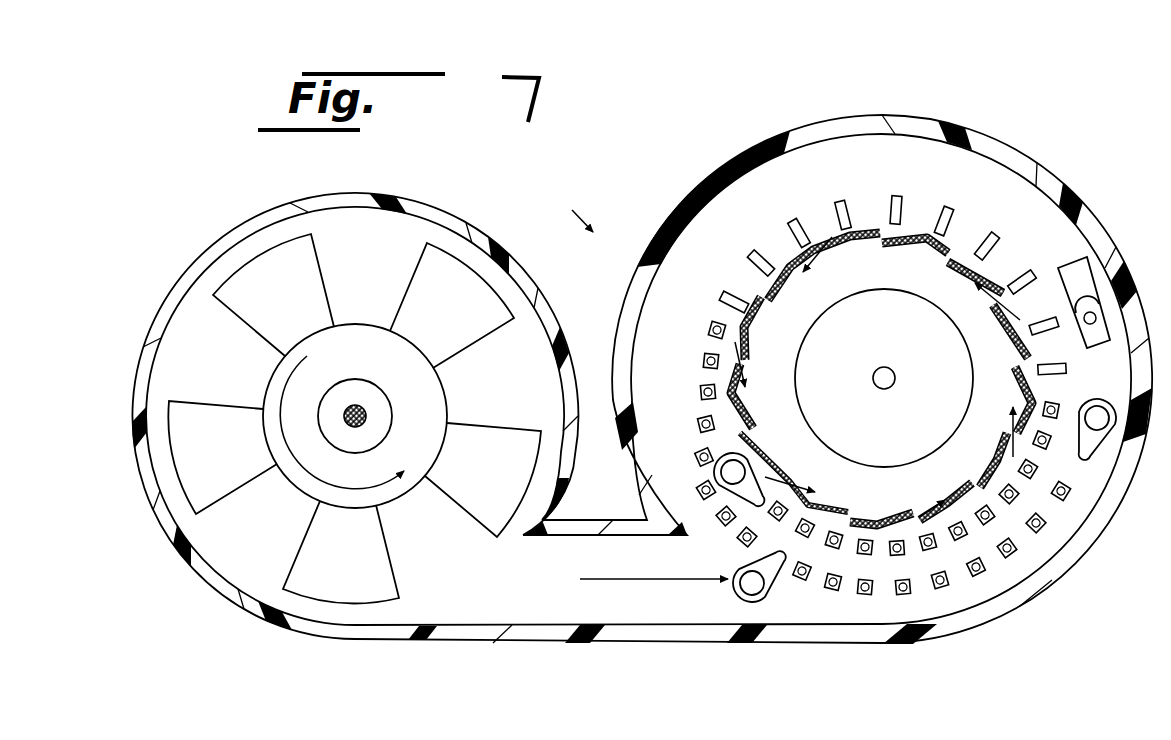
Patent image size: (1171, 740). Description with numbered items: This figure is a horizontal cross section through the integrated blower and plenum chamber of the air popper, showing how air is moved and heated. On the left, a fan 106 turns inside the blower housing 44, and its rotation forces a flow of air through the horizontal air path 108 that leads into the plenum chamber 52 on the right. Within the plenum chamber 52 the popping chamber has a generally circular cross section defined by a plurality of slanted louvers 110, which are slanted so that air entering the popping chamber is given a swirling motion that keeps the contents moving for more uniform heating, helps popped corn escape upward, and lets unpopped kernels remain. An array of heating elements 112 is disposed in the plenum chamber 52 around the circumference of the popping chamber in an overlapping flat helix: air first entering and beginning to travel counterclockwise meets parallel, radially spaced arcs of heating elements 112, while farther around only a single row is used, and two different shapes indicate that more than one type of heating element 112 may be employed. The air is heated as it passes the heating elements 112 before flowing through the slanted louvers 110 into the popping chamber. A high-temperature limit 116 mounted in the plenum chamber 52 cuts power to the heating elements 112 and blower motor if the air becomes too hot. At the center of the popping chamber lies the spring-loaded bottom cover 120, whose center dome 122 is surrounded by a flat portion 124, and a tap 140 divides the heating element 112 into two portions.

The blower housing 44 is at (242, 228).
The fan 106 is at (454, 270).
The plenum chamber 52 is at (906, 118).
The horizontal air path 108 is at (673, 608).
The slanted louvers 110 is at (888, 235).
The heating elements 112 is at (1070, 493).
The high-temperature limit 116 is at (1073, 280).
The spring-loaded bottom cover 120 is at (813, 398).
The center dome 122 is at (885, 315).
The flat portion 124 is at (857, 262).
The tap 140 is at (775, 560).